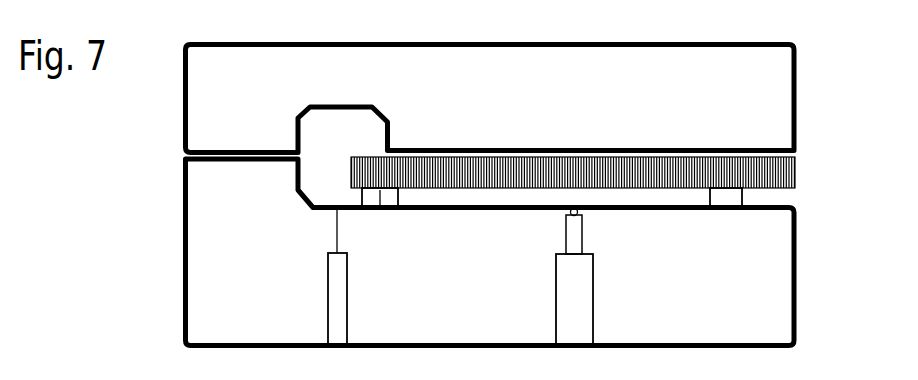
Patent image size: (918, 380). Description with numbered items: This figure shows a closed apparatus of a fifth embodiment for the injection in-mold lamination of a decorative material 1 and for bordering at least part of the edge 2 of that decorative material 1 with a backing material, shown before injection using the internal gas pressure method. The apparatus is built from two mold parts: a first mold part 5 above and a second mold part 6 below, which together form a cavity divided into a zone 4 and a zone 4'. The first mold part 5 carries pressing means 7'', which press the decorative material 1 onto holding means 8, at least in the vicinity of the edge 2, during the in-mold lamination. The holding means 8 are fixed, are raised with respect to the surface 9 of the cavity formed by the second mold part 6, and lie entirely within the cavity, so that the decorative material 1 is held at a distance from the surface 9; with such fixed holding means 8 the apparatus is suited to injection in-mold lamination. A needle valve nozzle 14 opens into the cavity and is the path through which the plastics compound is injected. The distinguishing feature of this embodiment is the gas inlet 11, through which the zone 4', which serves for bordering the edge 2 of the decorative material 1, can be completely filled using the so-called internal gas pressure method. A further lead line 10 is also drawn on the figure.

The decorative material 1 is at (527, 180).
The edge 2 is at (348, 160).
The cavity zone 4 is at (538, 228).
The cavity zone 4' is at (318, 167).
The first mold part 5 is at (238, 109).
The second mold part 6 is at (241, 259).
The pressing means 7'' is at (557, 115).
The holding means 8 is at (380, 210).
The surface 9 is at (769, 207).
The surface 10 is at (673, 158).
The gas inlet 11 is at (334, 280).
The needle valve nozzle 14 is at (591, 326).